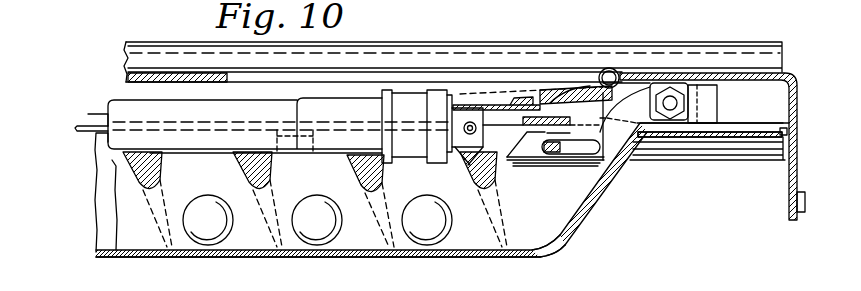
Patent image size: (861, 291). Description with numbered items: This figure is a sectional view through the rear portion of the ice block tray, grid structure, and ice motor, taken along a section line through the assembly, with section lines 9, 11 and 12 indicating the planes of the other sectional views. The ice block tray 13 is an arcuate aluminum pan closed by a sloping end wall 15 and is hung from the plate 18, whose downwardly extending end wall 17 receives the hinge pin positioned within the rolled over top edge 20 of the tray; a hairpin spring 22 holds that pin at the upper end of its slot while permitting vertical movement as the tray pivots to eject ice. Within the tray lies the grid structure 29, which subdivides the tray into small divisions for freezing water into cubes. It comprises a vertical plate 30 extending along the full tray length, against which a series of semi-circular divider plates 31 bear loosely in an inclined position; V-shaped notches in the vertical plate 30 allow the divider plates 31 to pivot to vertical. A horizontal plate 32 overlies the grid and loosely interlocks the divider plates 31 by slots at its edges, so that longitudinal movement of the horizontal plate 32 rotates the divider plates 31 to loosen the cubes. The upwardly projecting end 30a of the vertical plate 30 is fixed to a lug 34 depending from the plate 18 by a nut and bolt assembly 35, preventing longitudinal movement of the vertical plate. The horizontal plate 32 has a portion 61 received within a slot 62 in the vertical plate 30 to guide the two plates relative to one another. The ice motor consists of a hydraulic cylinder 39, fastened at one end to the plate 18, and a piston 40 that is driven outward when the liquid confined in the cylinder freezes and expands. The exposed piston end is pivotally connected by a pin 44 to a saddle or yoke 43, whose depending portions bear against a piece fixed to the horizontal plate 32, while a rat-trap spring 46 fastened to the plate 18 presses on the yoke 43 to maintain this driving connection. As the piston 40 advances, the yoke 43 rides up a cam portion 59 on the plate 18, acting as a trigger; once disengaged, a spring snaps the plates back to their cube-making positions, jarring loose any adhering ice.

The section line 9- 9 is at (112, 80).
The section line 11- 11 is at (472, 30).
The section line 12- 12 is at (571, 62).
The ice block tray 13 is at (350, 262).
The sloping end wall 15 is at (580, 229).
The plate end wall 17 is at (790, 222).
The plate 18 is at (152, 72).
The rolled over top edge 20 is at (760, 153).
The hairpin spring 22 is at (789, 193).
The grid structure 29 is at (88, 113).
The vertical plate 30 is at (127, 233).
The upwardly projecting end 30a is at (712, 98).
The divider plate 31 is at (130, 178).
The horizontal plate 32 is at (90, 131).
The lug 34 is at (688, 120).
The nut and bolt assembly 35 is at (678, 108).
The hydraulic cylinder 39 is at (272, 107).
The piston 40 is at (458, 117).
The saddle or yoke 43 is at (497, 103).
The pin 44 is at (449, 191).
The rat-trap spring 46 is at (616, 70).
The cam portion 59 is at (575, 97).
The portion of plate 61 is at (603, 190).
The slot 62 is at (612, 176).